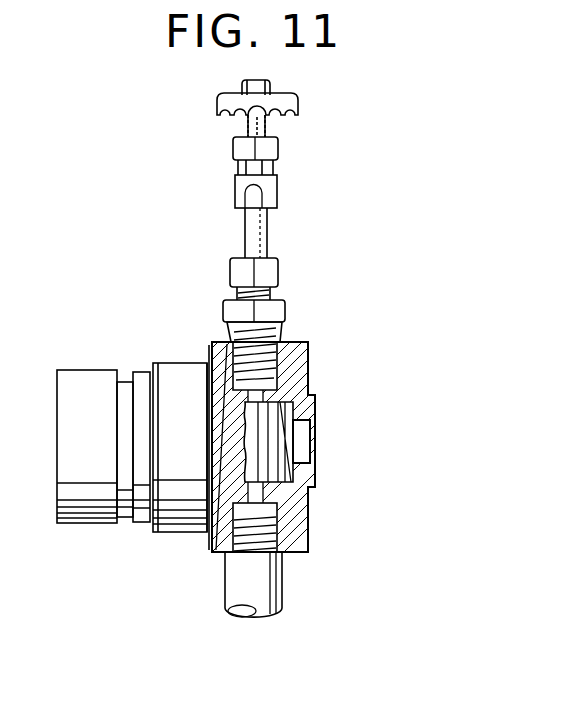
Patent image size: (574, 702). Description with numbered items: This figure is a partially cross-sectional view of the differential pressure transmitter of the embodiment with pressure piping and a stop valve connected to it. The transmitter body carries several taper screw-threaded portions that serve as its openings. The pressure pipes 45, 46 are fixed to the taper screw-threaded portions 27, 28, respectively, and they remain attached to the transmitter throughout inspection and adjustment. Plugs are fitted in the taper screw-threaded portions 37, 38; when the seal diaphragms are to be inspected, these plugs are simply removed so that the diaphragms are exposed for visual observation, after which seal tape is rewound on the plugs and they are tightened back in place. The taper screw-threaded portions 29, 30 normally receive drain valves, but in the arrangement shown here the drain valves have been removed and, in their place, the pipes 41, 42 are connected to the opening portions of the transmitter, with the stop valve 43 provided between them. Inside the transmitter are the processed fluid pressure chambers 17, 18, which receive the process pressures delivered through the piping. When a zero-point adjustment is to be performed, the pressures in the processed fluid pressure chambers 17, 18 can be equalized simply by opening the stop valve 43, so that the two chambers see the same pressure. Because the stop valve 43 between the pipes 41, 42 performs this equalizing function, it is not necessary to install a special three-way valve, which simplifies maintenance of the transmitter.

The stop valve 43 is at (220, 100).
The pipe 41 is at (318, 218).
The pipe 42 is at (262, 232).
The taper screw-threaded portion 27 is at (331, 362).
The taper screw-threaded portion 28 is at (272, 356).
The taper screw-threaded portion 37 is at (383, 423).
The taper screw-threaded portion 38 is at (300, 385).
The processed fluid pressure chamber 17 is at (344, 453).
The processed fluid pressure chamber 18 is at (253, 437).
The taper screw-threaded portion 29 is at (337, 546).
The taper screw-threaded portion 30 is at (275, 532).
The pressure pipe 45 is at (188, 586).
The pressure pipe 46 is at (237, 592).